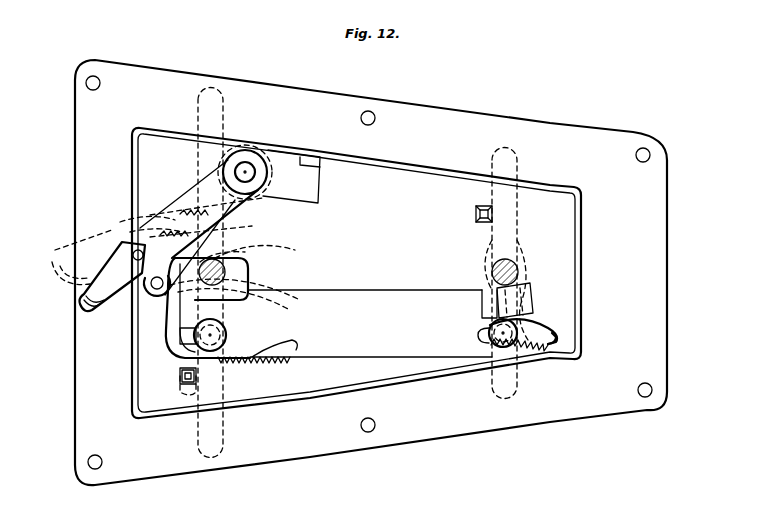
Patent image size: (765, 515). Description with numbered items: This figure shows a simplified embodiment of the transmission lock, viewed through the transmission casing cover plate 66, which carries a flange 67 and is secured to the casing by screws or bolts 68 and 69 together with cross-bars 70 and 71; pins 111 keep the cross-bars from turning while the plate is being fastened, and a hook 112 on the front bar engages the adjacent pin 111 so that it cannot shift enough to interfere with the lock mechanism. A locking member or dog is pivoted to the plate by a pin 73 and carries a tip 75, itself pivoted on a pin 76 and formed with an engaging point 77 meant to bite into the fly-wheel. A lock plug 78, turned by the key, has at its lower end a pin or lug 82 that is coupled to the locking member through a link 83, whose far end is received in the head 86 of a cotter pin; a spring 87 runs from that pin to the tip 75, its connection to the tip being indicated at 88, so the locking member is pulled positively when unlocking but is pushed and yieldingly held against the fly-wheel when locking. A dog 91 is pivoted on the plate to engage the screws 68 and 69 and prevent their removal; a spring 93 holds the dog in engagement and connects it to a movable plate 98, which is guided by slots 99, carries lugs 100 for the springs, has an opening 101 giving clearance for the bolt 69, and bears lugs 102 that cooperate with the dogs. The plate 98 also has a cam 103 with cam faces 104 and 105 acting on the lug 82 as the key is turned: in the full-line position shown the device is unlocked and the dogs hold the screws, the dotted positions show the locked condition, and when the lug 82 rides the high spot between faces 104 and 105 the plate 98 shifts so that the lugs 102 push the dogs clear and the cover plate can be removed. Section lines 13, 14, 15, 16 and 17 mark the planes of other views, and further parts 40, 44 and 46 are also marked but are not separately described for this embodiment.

The section line 13- 13 is at (505, 110).
The view arrow 14 is at (82, 320).
The view arrow 15 / cover plate 15 is at (331, 172).
The pivot pin 16 is at (188, 179).
The section line 17- 17 is at (46, 272).
The pivot stud 40 is at (228, 332).
The toothed sector 44 is at (522, 290).
The sector teeth 46 is at (542, 352).
The transmission casing cover plate 66 is at (408, 113).
The flange 67 is at (535, 182).
The screw or bolt 68 is at (514, 265).
The screw or bolt 69 is at (252, 250).
The cross-bar 70 is at (512, 235).
The cross-bar 71 is at (213, 90).
The pin 73 is at (247, 167).
The tip 75 is at (76, 256).
The pin 76 is at (182, 196).
The impinging or engaging point 77 is at (72, 274).
The lock plug 78 is at (158, 255).
The pin or lug 82 is at (168, 305).
The link 83 is at (206, 216).
The head 86 is at (200, 209).
The spring 87 is at (150, 208).
The spring connection 88 is at (148, 292).
The dog 91 is at (255, 292).
The spring 93 is at (250, 363).
The movable plate 98 is at (338, 302).
The slot 99 is at (178, 372).
The lug 100 is at (288, 355).
The opening 101 is at (262, 262).
The lug 102 is at (480, 290).
The cam 103 is at (185, 332).
The cam face 104 is at (220, 258).
The cam face 105 is at (180, 350).
The pin 111 is at (182, 383).
The hook 112 is at (180, 380).